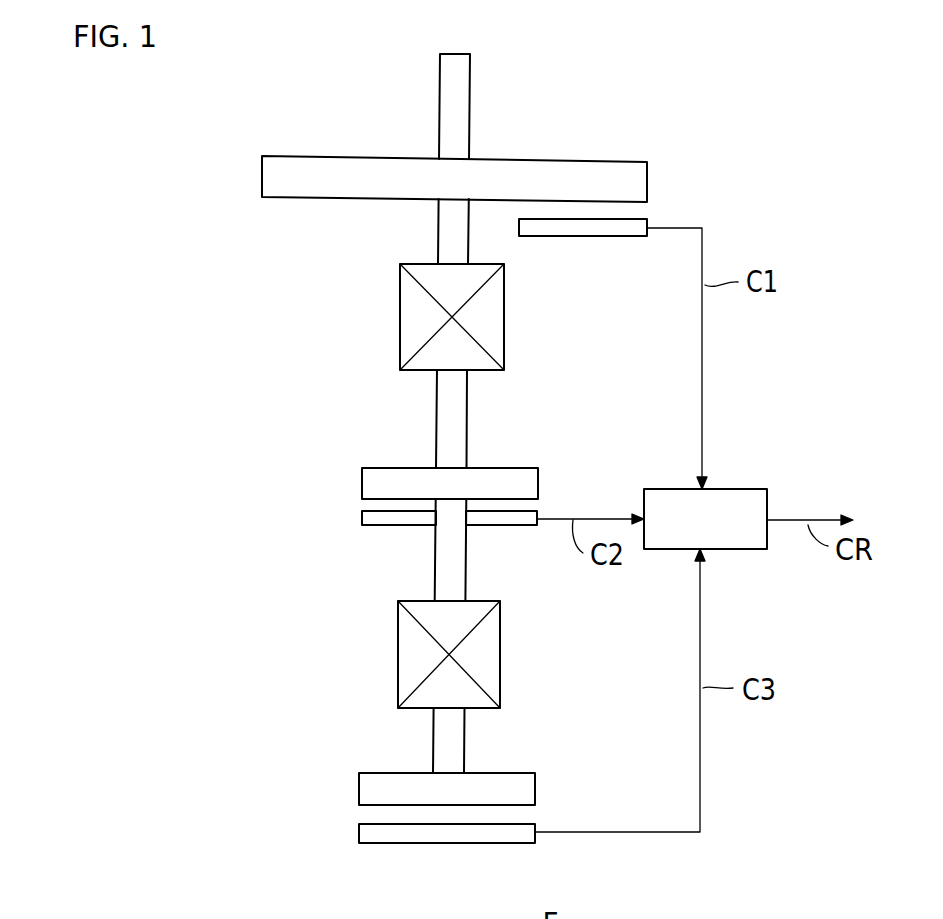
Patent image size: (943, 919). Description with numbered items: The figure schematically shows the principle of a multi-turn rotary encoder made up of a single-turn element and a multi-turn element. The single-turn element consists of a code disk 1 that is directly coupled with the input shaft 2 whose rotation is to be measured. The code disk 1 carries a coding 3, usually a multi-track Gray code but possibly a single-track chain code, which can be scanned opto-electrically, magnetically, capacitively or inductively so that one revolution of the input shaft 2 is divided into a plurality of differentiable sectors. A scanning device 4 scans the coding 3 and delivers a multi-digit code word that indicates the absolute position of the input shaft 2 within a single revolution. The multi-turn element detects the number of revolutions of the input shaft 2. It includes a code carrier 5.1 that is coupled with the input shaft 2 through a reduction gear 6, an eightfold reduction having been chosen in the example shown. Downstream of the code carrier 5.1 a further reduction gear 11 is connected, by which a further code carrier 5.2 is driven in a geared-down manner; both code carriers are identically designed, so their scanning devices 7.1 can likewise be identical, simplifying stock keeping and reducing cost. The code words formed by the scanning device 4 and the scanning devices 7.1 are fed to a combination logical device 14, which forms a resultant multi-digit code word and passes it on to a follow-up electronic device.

The code disk 1 is at (625, 178).
The input shaft 2 is at (465, 68).
The coding 3 is at (584, 150).
The scanning device 4 is at (633, 228).
The code carrier 5.1 is at (362, 481).
The further code carrier 5.2 is at (359, 777).
The reduction gear 6 is at (410, 316).
The scanning device 7.1 is at (362, 518).
The reduction gear 11 is at (415, 656).
The combination logical device 14 is at (735, 508).